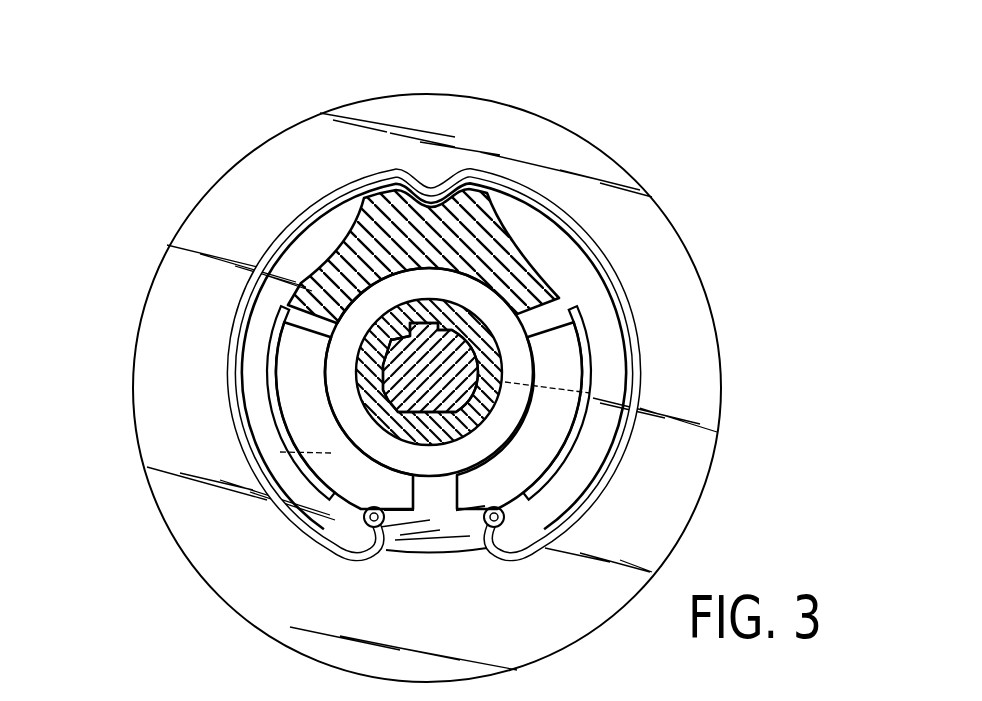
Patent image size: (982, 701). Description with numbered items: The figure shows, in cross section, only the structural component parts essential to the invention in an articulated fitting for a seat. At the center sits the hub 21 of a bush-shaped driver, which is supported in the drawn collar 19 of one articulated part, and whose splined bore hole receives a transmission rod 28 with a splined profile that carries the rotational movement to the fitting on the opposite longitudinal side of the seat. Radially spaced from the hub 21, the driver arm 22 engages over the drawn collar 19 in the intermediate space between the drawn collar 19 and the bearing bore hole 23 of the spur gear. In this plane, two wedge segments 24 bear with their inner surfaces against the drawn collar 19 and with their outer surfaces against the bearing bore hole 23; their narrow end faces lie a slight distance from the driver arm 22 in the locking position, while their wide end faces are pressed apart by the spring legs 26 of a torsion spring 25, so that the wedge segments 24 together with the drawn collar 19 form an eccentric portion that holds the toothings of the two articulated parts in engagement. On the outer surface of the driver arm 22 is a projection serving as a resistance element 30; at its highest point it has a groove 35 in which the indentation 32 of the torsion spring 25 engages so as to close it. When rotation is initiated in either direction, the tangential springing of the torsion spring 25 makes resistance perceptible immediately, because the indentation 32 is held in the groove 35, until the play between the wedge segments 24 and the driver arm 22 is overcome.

The drawn collar 19 is at (507, 410).
The hub 21 is at (483, 337).
The driver arm 22 is at (482, 258).
The bearing bore hole 23 is at (297, 310).
The wedge segments 24 is at (349, 495).
The torsion spring 25 is at (593, 236).
The spring legs 26 is at (507, 545).
The transmission rod 28 is at (423, 375).
The resistance element 30 is at (360, 217).
The indentation 32 is at (441, 175).
The groove 35 is at (489, 213).